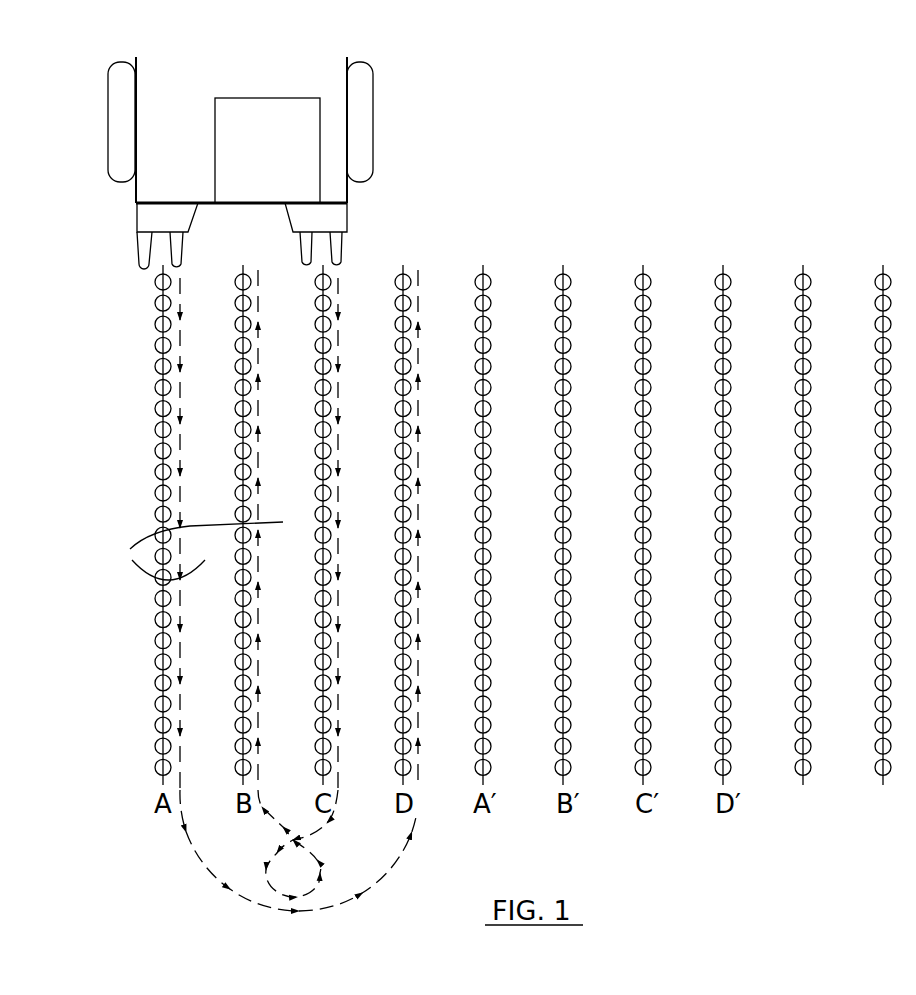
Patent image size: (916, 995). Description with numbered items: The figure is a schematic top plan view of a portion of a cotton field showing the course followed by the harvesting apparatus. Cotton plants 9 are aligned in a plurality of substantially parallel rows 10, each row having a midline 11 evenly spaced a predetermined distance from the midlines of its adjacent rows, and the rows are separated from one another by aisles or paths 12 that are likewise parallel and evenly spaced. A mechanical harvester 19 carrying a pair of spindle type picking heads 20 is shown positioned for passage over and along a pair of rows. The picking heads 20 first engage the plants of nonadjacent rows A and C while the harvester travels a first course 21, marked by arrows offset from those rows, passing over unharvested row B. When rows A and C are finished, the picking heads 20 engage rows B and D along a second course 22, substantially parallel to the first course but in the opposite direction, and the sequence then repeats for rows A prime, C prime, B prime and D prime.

The cotton plants 9 is at (230, 306).
The rows 10 is at (482, 525).
The midlines 11 is at (160, 440).
The paths 12 is at (197, 551).
The mechanical harvester 19 is at (386, 170).
The picking heads 20 is at (318, 218).
The first course 21 is at (180, 288).
The second course 22 is at (258, 495).